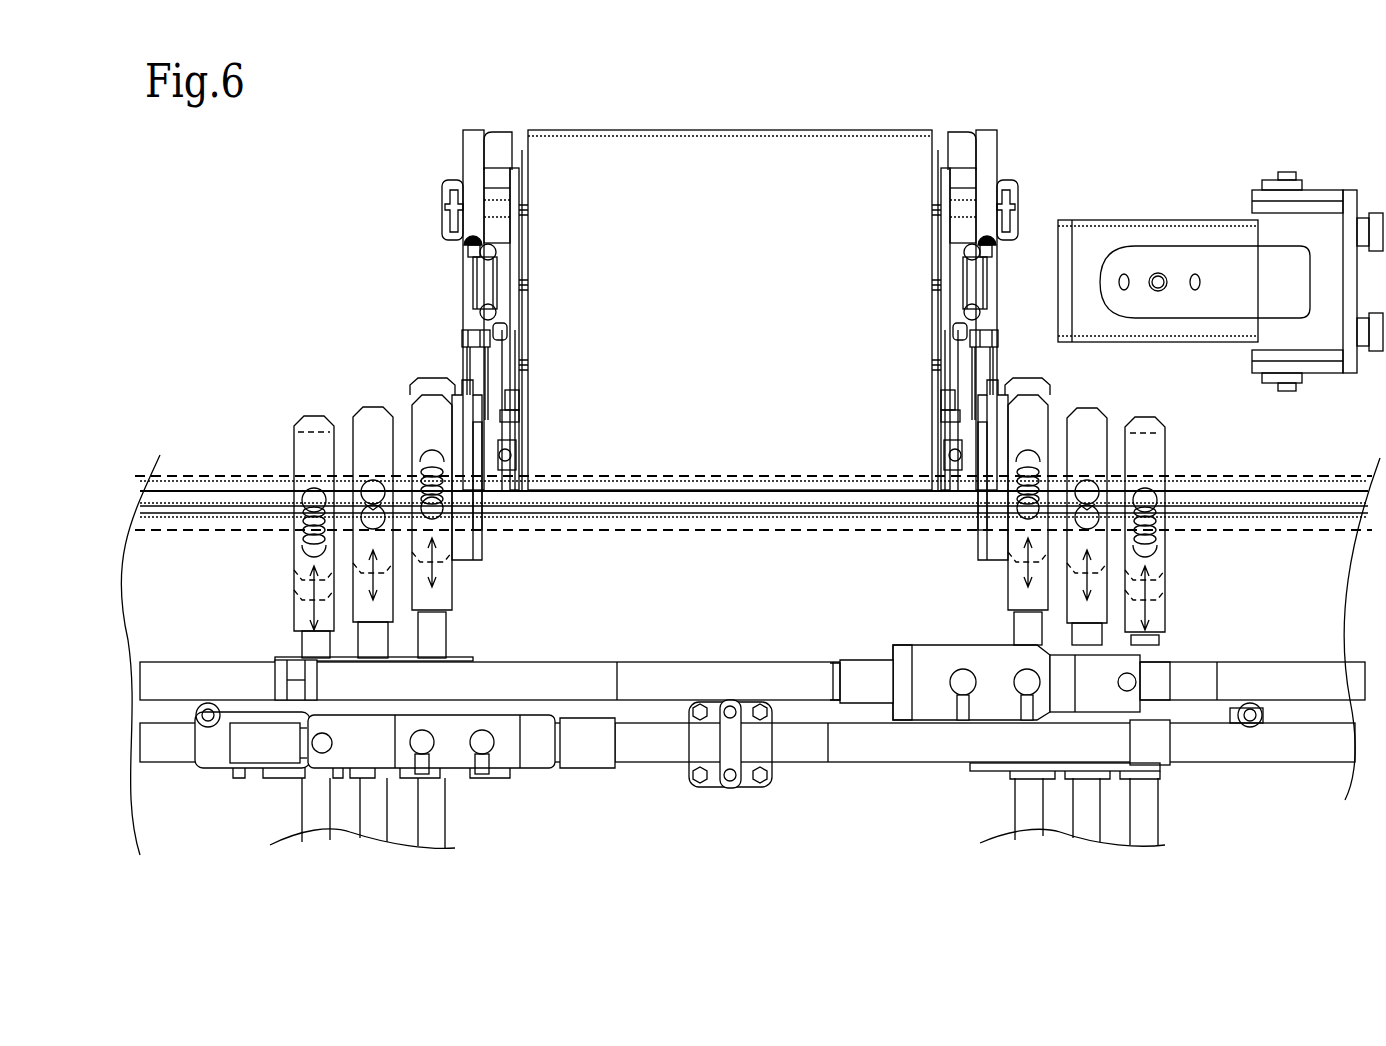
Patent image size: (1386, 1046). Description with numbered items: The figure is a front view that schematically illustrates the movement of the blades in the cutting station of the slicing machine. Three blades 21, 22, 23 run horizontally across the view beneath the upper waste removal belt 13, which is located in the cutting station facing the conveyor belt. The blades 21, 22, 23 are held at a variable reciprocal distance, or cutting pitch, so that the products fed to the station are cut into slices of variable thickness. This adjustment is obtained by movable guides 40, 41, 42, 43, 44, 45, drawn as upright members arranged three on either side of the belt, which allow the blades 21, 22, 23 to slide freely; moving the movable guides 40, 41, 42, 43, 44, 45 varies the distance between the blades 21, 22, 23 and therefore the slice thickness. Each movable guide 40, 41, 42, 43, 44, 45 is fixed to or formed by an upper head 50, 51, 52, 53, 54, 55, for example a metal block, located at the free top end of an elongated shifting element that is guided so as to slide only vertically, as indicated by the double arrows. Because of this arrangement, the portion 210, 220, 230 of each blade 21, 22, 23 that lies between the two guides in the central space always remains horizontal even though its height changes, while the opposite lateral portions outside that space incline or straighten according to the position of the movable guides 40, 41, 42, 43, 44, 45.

The upper waste removal belt 13 is at (838, 182).
The blade 21 is at (192, 475).
The blade 22 is at (243, 500).
The blade 23 is at (165, 540).
The movable guide 40 is at (428, 440).
The movable guide 41 is at (1018, 522).
The movable guide 42 is at (375, 415).
The movable guide 43 is at (1082, 450).
The movable guide 44 is at (300, 478).
The movable guide 45 is at (1155, 480).
The upper head 50 is at (445, 592).
The upper head 51 is at (1022, 395).
The upper head 52 is at (380, 400).
The upper head 53 is at (1100, 405).
The upper head 54 is at (292, 548).
The upper head 55 is at (1170, 565).
The portion of blade 210 is at (626, 488).
The portion of blade 220 is at (780, 503).
The portion of blade 230 is at (660, 533).